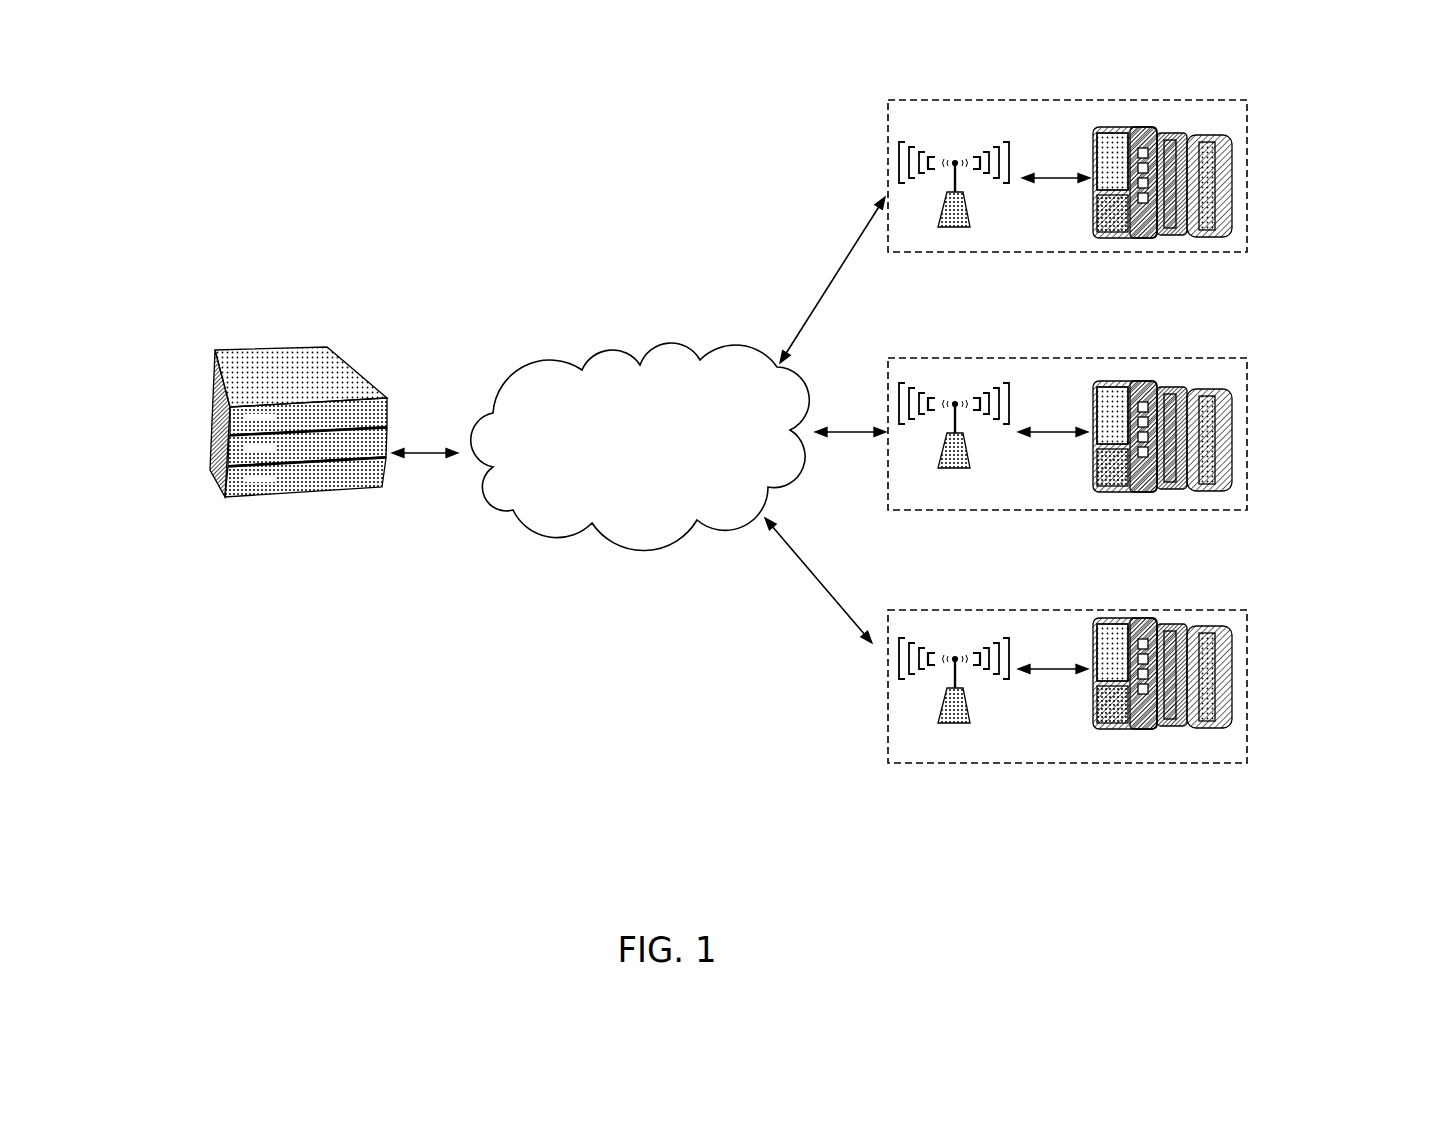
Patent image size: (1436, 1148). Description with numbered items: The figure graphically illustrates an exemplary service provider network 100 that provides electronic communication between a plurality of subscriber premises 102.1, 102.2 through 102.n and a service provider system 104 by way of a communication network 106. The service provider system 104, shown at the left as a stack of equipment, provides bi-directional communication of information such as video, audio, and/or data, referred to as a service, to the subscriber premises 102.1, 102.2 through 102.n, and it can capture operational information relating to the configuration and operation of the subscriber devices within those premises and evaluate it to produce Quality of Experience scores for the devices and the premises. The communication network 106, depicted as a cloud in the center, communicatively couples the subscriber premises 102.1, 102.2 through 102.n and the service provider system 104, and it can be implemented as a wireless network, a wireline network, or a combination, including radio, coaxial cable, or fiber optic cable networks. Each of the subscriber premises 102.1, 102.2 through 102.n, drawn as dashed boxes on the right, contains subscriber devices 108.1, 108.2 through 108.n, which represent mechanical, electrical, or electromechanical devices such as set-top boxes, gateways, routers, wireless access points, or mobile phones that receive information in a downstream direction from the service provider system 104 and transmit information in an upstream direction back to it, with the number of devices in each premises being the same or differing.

The service provider network 100 is at (260, 147).
The subscriber premises 102.1 is at (1247, 173).
The subscriber premises 102.2 is at (1247, 433).
The subscriber premises 102.n is at (1247, 685).
The service provider system 104 is at (287, 347).
The communication network 106 is at (667, 342).
The subscriber device 108.1 is at (947, 130).
The subscriber device 108.2 is at (1110, 125).
The subscriber device 108.n is at (1213, 128).